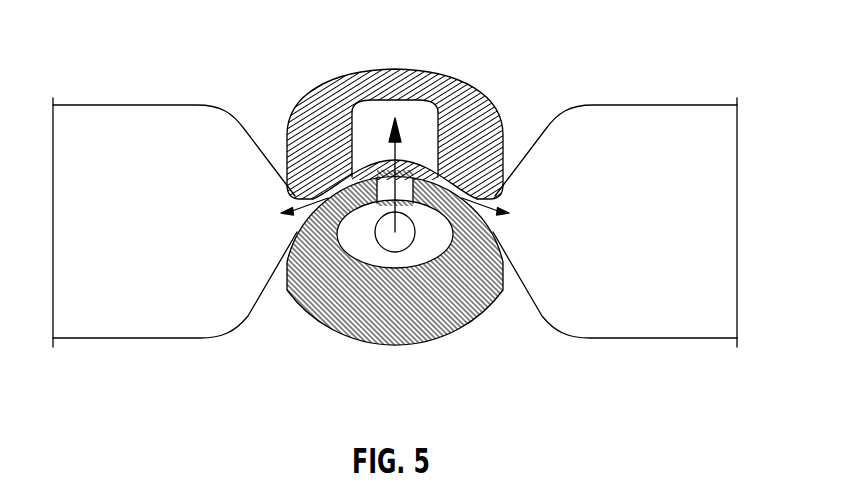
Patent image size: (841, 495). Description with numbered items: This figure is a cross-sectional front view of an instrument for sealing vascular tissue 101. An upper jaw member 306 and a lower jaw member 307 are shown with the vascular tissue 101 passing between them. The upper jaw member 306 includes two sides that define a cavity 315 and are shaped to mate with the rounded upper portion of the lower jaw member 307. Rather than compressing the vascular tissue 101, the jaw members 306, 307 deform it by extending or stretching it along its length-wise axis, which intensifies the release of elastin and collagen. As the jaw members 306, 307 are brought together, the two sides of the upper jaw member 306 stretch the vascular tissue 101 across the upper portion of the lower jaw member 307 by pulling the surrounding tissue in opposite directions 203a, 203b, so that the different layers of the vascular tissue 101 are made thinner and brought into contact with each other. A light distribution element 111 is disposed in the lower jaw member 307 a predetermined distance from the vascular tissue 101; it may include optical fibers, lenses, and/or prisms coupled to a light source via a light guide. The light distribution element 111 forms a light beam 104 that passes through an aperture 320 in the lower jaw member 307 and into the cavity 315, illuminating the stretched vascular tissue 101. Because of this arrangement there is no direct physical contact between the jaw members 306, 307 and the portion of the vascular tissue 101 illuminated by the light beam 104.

The vascular tissue 101 is at (168, 125).
The light beam 104 is at (400, 145).
The light distribution element 111 is at (387, 238).
The first opposite direction 203a is at (293, 196).
The second opposite direction 203b is at (483, 208).
The upper jaw member 306 is at (323, 97).
The lower jaw member 307 is at (457, 323).
The cavity 315 is at (392, 108).
The aperture 320 is at (432, 178).